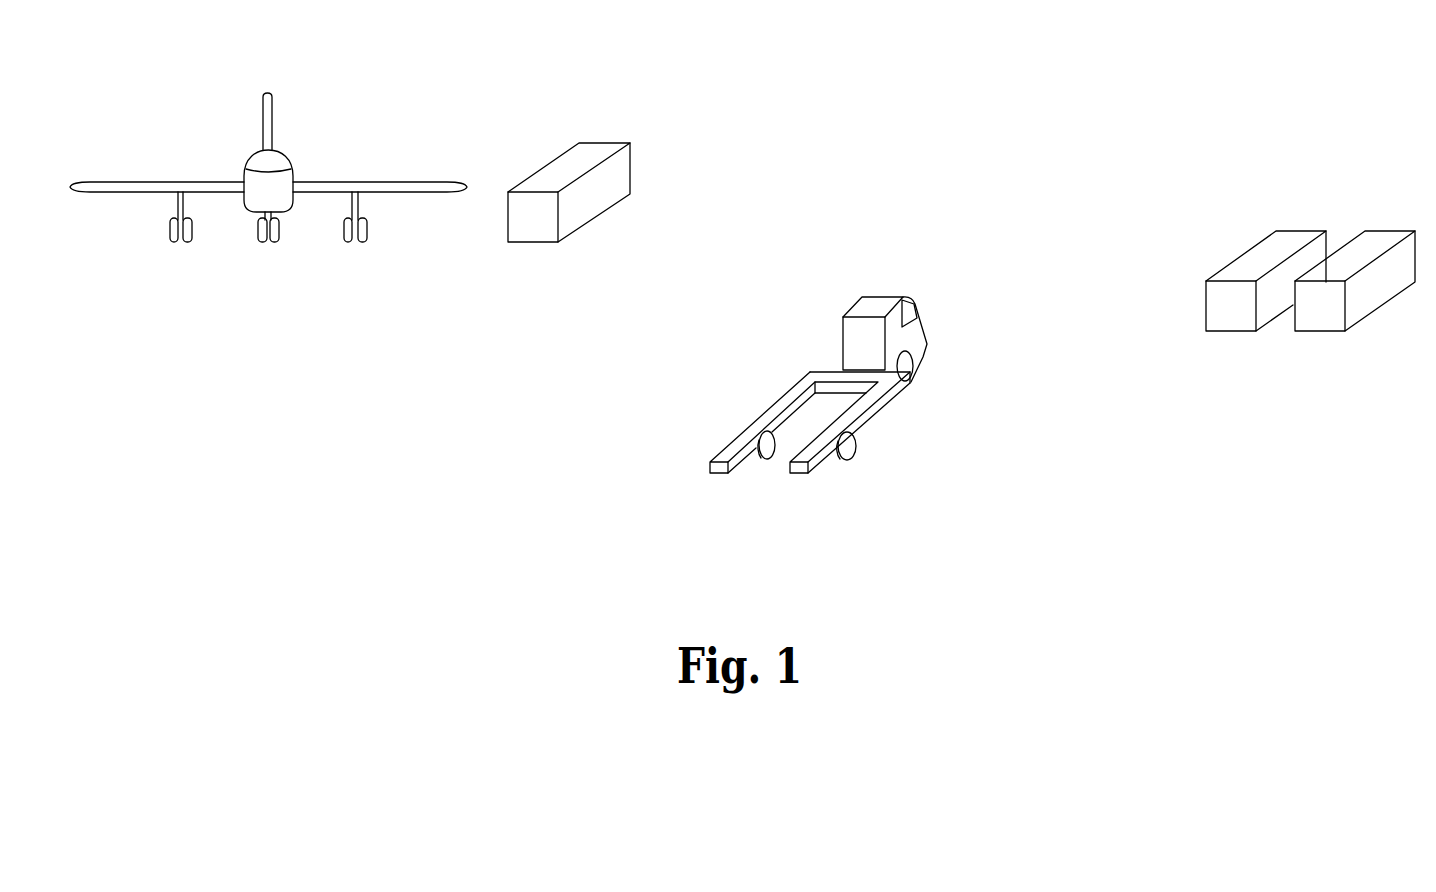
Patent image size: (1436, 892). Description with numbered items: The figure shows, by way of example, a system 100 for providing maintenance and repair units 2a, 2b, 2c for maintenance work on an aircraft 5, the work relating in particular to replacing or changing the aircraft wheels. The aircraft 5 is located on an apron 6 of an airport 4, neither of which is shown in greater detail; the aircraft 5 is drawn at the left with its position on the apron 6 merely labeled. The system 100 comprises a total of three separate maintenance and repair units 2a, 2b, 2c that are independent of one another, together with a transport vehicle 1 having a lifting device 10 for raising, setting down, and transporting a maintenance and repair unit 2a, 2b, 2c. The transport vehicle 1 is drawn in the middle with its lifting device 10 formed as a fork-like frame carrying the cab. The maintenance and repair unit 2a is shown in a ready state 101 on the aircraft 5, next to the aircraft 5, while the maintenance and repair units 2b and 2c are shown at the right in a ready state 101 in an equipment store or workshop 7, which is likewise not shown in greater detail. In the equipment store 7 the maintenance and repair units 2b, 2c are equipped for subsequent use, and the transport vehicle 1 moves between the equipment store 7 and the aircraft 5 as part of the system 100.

The transport vehicle 1 is at (818, 376).
The maintenance and repair unit 2a is at (541, 136).
The maintenance and repair unit 2b is at (1237, 226).
The maintenance and repair unit 2c is at (1391, 221).
The airport 4 is at (970, 136).
The aircraft 5 is at (231, 127).
The apron 6 is at (461, 289).
The equipment store or workshop 7 is at (1348, 389).
The lifting device 10 is at (748, 469).
The system 100 is at (1132, 463).
The ready state 101 is at (528, 299).